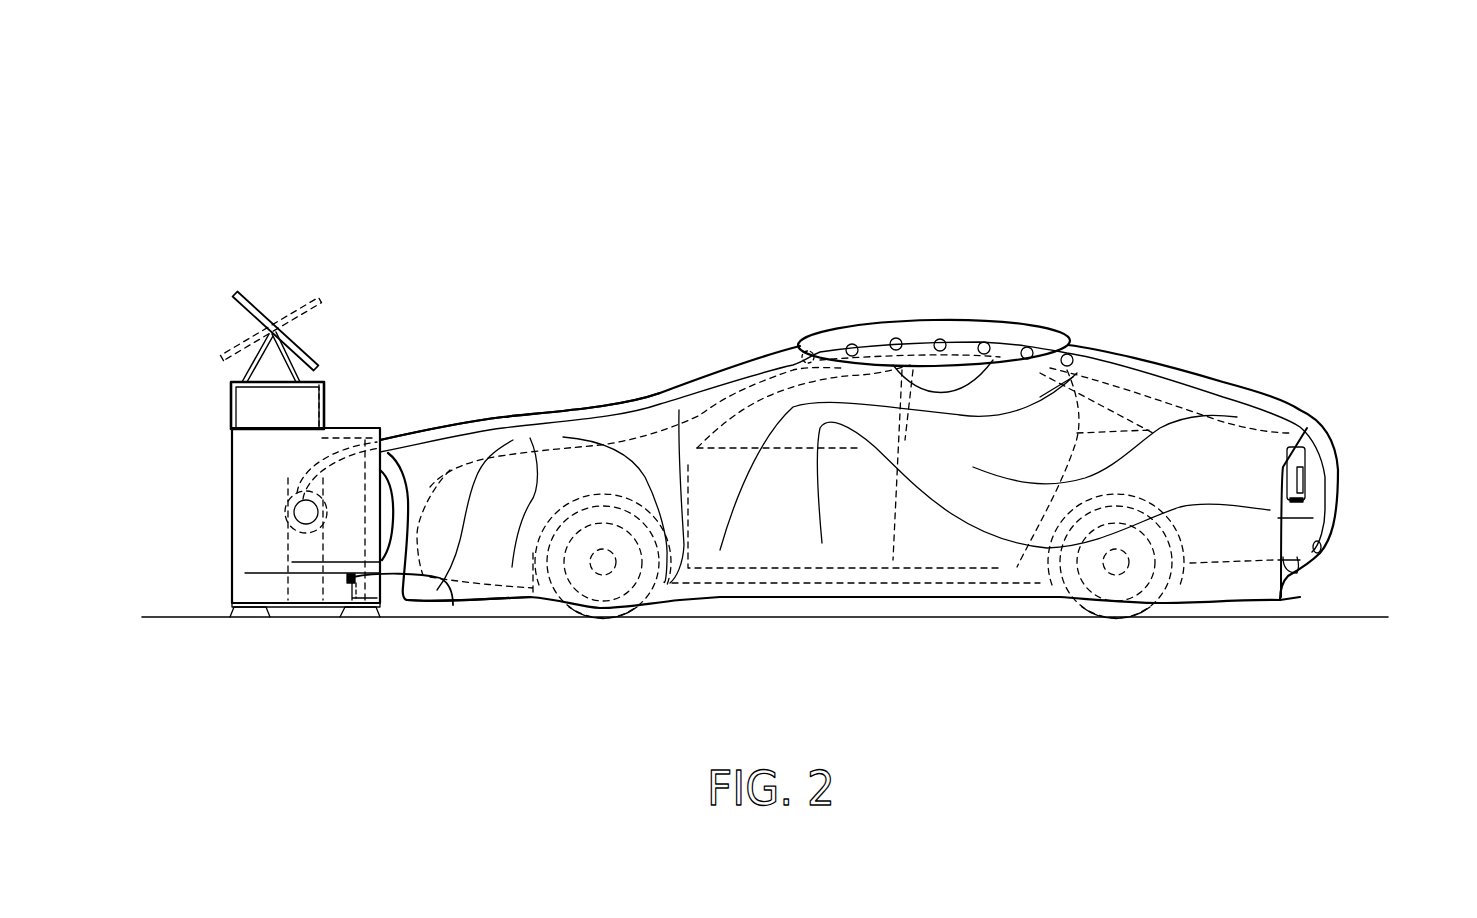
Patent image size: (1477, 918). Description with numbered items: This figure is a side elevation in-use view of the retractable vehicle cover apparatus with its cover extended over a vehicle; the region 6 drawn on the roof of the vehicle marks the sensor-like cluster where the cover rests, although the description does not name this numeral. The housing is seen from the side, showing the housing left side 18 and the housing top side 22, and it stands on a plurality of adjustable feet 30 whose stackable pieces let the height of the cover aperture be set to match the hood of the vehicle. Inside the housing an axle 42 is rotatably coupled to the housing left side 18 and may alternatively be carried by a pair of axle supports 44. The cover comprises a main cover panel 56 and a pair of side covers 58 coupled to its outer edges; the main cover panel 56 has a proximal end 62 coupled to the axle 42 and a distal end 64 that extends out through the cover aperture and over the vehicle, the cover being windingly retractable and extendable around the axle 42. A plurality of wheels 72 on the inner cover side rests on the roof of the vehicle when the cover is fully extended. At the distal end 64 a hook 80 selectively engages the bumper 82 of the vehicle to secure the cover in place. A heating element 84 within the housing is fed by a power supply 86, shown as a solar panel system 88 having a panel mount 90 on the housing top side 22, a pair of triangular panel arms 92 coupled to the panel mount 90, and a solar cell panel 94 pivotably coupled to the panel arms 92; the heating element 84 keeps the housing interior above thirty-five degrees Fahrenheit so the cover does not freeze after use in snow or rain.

The sensor array housing 6 is at (906, 319).
The housing left side 18 is at (247, 527).
The housing top side 22 is at (355, 427).
The adjustable feet 30 is at (365, 620).
The axle 42 is at (307, 517).
The axle supports 44 is at (292, 548).
The main cover panel 56 is at (498, 424).
The side covers 58 is at (480, 590).
The proximal end 62 is at (297, 493).
The distal end 64 is at (1322, 549).
The wheels 72 is at (896, 341).
The hook 80 is at (1293, 573).
The bumper 82 is at (1293, 537).
The heating element 84 is at (453, 605).
The power supply 86 is at (381, 603).
The solar panel system 88 is at (356, 361).
The panel mount 90 is at (235, 400).
The triangular panel arms 92 is at (253, 368).
The solar cell panel 94 is at (256, 302).